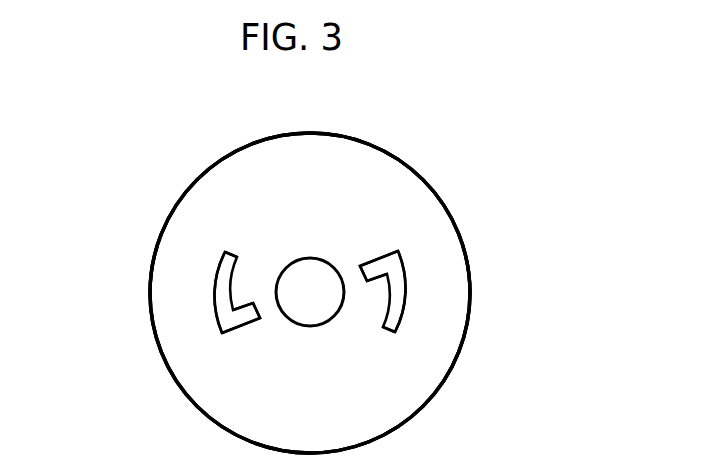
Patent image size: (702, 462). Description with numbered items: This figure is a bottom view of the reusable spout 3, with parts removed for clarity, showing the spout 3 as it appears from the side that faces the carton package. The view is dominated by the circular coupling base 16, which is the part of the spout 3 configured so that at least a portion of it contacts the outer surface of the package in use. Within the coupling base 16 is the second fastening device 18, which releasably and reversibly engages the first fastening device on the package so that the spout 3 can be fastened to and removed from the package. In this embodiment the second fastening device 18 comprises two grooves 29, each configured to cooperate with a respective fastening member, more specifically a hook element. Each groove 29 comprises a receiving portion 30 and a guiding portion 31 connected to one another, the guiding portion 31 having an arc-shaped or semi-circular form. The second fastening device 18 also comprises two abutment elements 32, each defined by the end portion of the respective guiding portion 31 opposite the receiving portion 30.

The reusable spout 3 is at (445, 150).
The coupling base 16 is at (400, 140).
The second fastening device 18 is at (165, 232).
The groove 29 is at (185, 278).
The receiving portion 30 is at (372, 270).
The guiding portion 31 is at (213, 292).
The abutment element 32 is at (224, 255).